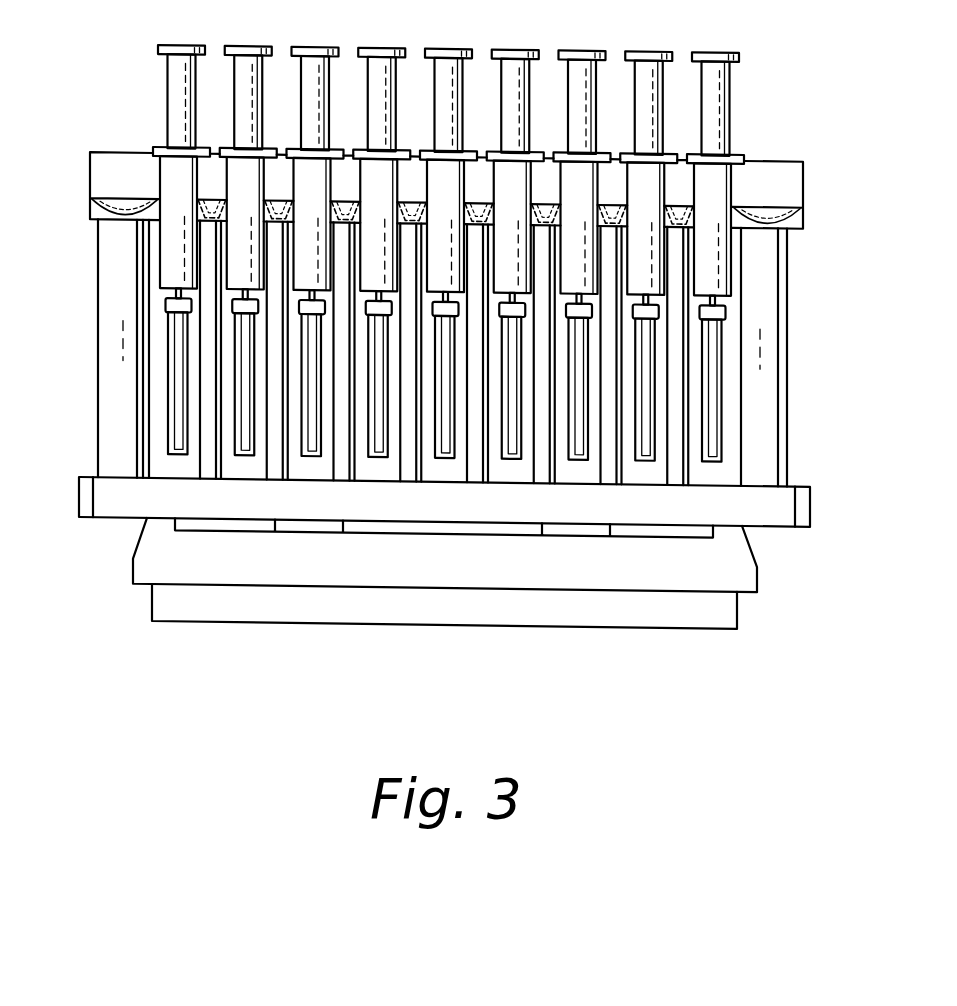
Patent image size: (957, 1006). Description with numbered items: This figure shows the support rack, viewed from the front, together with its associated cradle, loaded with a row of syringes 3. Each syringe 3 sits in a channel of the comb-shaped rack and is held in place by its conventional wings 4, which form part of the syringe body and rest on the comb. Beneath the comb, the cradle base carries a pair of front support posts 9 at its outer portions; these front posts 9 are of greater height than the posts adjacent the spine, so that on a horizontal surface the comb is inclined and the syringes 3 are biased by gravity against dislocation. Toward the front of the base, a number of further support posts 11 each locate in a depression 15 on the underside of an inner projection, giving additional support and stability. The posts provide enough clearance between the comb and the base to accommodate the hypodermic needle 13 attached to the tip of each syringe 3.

The syringe 3 is at (777, 259).
The wings 4 is at (158, 147).
The front support posts 9 is at (107, 342).
The further support posts 11 is at (207, 458).
The hypodermic needle 13 is at (712, 428).
The depression 15 is at (682, 197).